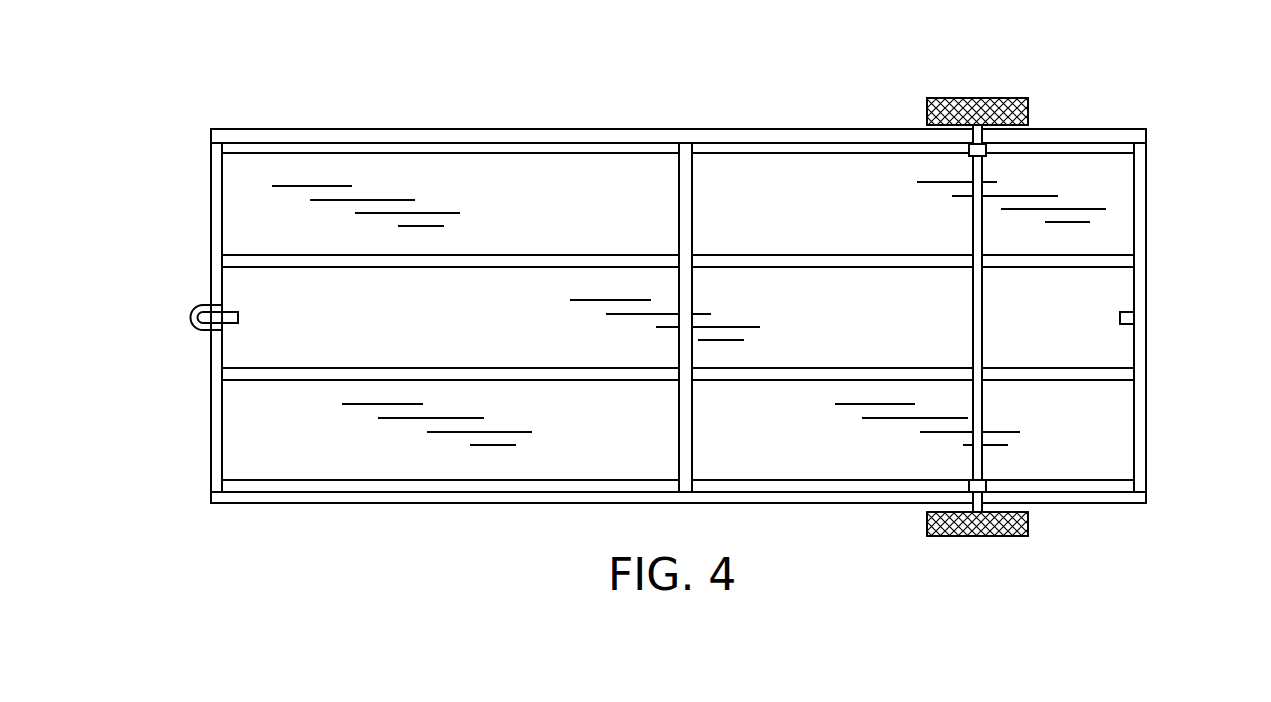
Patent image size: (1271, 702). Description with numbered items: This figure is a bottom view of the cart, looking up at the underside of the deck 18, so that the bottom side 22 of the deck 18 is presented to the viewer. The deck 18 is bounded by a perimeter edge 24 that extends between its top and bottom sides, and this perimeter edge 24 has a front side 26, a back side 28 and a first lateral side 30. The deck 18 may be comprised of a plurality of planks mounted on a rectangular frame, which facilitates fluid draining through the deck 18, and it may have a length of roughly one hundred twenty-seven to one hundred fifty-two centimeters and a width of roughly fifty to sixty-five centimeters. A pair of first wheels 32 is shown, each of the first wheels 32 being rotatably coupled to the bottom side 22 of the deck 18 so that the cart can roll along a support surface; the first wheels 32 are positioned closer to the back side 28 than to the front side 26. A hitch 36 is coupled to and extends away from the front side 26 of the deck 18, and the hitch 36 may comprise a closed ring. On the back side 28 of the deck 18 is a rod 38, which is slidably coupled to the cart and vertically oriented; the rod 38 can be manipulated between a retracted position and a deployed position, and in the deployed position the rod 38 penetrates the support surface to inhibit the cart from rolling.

The deck 18 is at (503, 130).
The bottom side 22 is at (345, 190).
The perimeter edge 24 is at (724, 130).
The front side 26 is at (210, 212).
The back side 28 is at (1146, 207).
The first lateral side 30 is at (838, 130).
The first wheels 32 is at (979, 98).
The hitch 36 is at (190, 320).
The rod 38 is at (1126, 312).